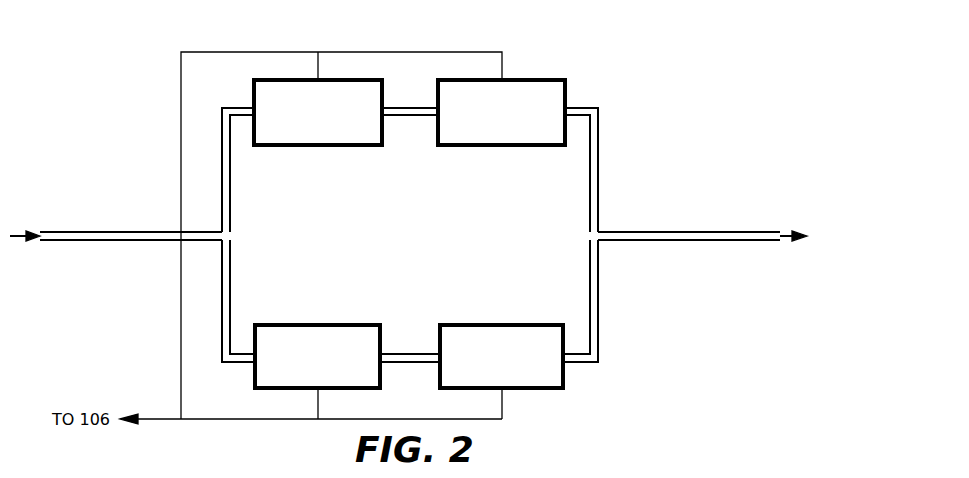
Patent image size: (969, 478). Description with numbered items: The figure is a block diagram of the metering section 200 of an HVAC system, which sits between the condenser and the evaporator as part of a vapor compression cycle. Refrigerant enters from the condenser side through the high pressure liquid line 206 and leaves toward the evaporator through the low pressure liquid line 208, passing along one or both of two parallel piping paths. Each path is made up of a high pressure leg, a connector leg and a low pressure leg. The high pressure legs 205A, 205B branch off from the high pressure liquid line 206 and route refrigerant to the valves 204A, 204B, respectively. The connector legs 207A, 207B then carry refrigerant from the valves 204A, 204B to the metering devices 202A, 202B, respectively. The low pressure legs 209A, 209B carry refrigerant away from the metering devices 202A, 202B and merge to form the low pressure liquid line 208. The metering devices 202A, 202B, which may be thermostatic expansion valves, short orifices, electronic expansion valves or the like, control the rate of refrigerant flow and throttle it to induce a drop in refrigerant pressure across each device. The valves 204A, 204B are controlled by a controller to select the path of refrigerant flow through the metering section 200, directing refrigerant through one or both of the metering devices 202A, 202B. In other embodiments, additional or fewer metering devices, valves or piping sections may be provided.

The metering section 200 is at (595, 81).
The metering device 202A is at (501, 112).
The metering device 202B is at (501, 356).
The valve 204A is at (318, 112).
The valve 204B is at (317, 356).
The high pressure leg 205A is at (230, 179).
The high pressure leg 205B is at (230, 301).
The high pressure liquid line 206 is at (112, 231).
The connector leg 207A is at (410, 118).
The connector leg 207B is at (408, 352).
The low pressure liquid line 208 is at (655, 232).
The low pressure leg 209A is at (590, 178).
The low pressure leg 209B is at (590, 300).